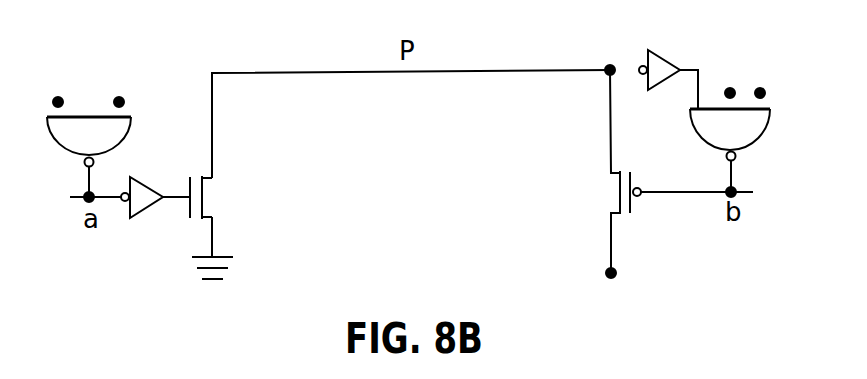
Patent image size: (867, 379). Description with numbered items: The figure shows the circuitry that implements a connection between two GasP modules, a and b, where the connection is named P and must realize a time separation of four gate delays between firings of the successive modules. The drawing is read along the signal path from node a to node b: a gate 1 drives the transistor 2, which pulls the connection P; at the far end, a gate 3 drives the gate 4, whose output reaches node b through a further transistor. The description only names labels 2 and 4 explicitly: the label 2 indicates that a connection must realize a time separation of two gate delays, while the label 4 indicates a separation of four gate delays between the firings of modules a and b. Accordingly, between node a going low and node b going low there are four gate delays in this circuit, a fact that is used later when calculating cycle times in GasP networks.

The inverter 1 is at (155, 205).
The label 2 is at (214, 227).
The inverter 3 is at (668, 71).
The label 4 is at (716, 140).